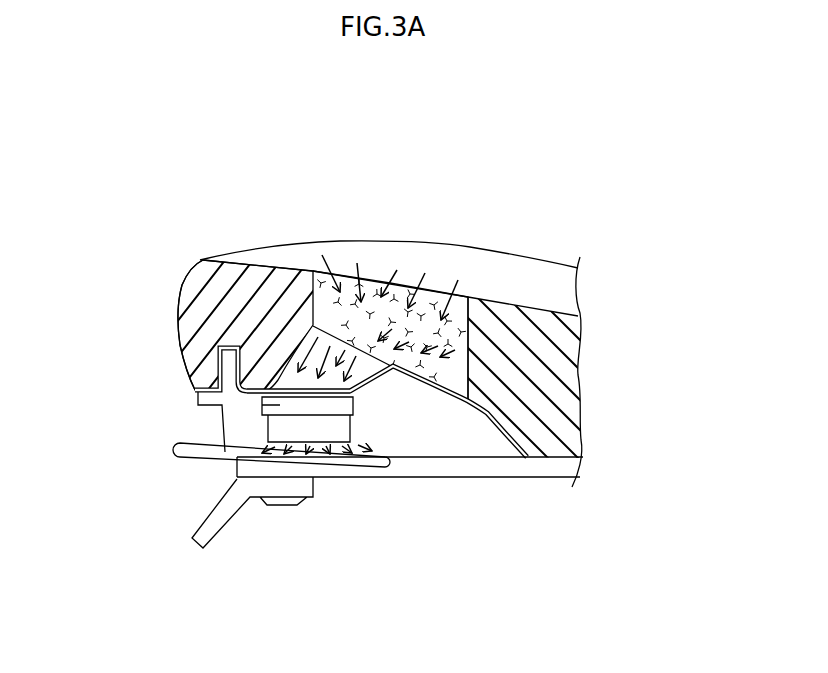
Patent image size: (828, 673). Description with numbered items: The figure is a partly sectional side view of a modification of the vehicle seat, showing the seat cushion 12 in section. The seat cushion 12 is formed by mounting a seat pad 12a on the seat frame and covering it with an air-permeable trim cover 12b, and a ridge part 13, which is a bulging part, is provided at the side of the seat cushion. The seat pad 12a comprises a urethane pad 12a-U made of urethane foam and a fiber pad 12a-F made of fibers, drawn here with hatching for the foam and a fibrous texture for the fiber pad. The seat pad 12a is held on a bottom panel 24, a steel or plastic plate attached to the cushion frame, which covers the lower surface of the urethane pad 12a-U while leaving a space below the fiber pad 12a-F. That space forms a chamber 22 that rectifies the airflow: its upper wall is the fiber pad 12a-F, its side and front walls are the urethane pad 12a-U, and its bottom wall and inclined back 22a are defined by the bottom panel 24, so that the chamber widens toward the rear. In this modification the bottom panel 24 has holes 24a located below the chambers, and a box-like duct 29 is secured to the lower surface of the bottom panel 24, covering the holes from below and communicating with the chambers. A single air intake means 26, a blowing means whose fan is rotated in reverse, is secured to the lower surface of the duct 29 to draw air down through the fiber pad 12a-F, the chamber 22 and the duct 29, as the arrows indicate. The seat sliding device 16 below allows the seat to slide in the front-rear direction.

The seat cushion 12 is at (355, 288).
The seat pad 12a is at (256, 253).
The urethane pad 12a-U is at (207, 258).
The fiber pad 12a-F is at (350, 268).
The trim cover 12b is at (176, 333).
The ridge part 13 is at (470, 250).
The chamber 22 is at (387, 373).
The back of the chamber 22a is at (367, 390).
The bottom panel 24 is at (460, 398).
The slit 24a is at (328, 393).
The air intake means 26 is at (288, 429).
The duct 29 is at (197, 407).
The seat sliding device 16 is at (347, 490).